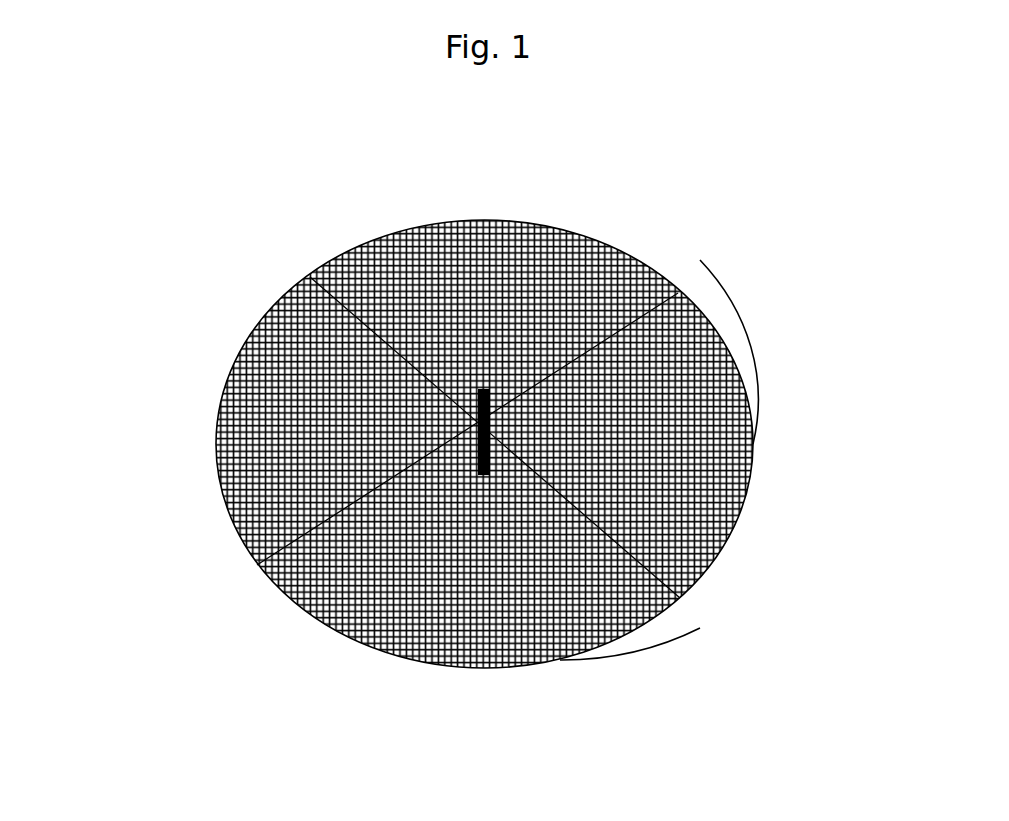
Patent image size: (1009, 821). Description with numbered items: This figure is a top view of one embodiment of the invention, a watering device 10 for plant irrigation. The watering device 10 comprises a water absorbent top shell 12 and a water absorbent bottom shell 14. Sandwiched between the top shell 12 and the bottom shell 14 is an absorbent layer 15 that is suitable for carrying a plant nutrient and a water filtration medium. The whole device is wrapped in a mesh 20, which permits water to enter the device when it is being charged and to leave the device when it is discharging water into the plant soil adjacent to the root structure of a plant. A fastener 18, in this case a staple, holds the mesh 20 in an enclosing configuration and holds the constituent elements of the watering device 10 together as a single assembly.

The watering device 10 is at (208, 638).
The water absorbent top shell 12 is at (638, 256).
The water absorbent bottom shell 14 is at (613, 692).
The absorbent layer 15 is at (744, 358).
The fastener 18 is at (360, 642).
The mesh 20 is at (317, 377).